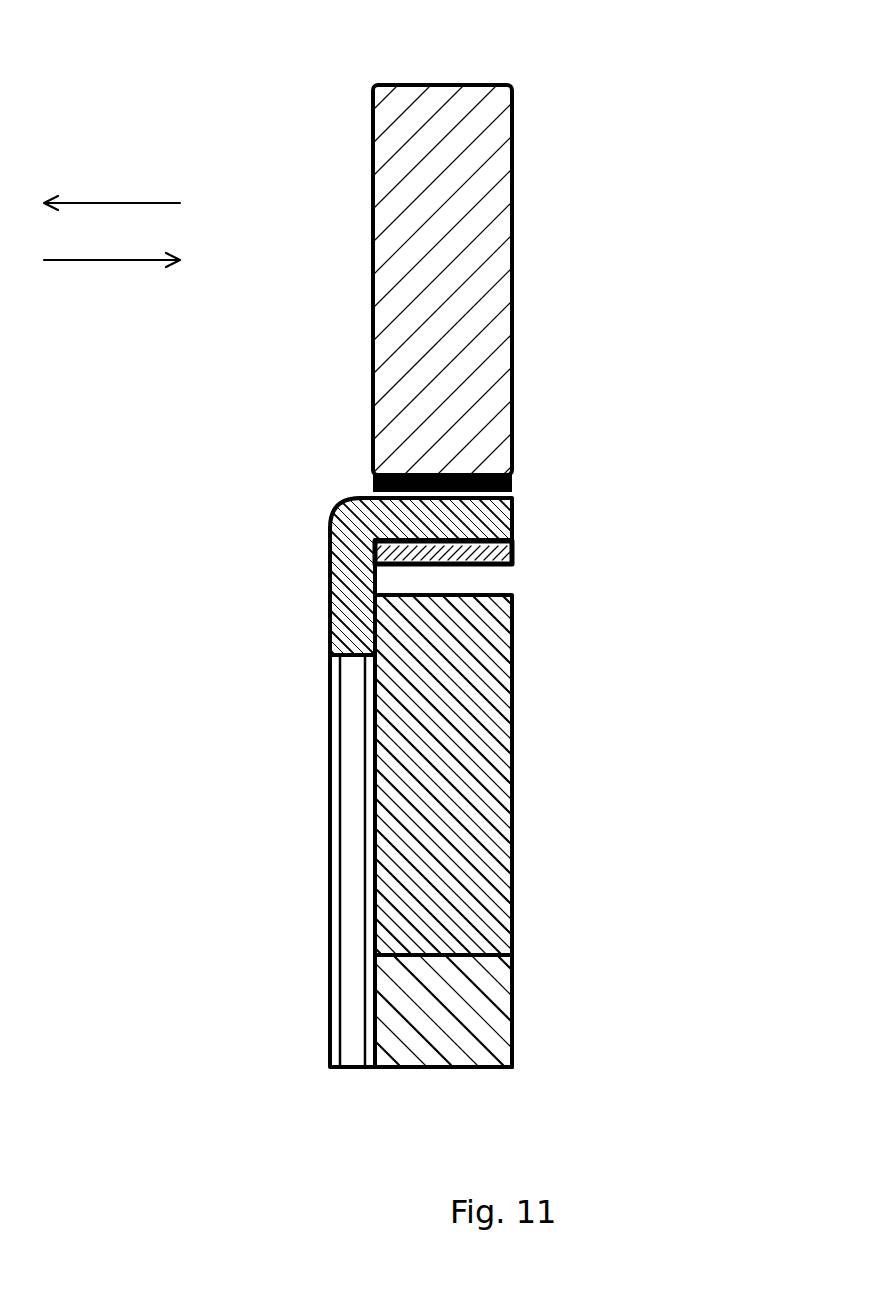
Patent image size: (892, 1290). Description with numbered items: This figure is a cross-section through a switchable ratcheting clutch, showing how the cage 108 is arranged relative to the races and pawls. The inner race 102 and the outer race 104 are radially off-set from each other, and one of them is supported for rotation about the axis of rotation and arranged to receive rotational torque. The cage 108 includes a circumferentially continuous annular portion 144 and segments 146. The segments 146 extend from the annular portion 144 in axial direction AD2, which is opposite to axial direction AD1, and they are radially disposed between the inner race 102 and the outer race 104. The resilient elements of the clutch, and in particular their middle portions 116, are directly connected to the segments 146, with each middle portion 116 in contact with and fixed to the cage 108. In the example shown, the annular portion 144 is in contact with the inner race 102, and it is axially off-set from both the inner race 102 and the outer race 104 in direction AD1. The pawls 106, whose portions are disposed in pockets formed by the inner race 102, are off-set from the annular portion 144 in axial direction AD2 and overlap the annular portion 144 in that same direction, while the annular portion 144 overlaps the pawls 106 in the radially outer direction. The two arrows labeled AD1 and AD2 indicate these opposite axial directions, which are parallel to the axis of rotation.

The inner race 102 is at (513, 1008).
The outer race 104 is at (445, 85).
The pawls 106 is at (513, 738).
The cage 108 is at (335, 512).
The middle portion 116 is at (513, 551).
The circumferentially continuous annular portion 144 is at (350, 623).
The segments 146 is at (513, 518).
The axial direction AD1 is at (87, 202).
The axial direction AD2 is at (110, 262).